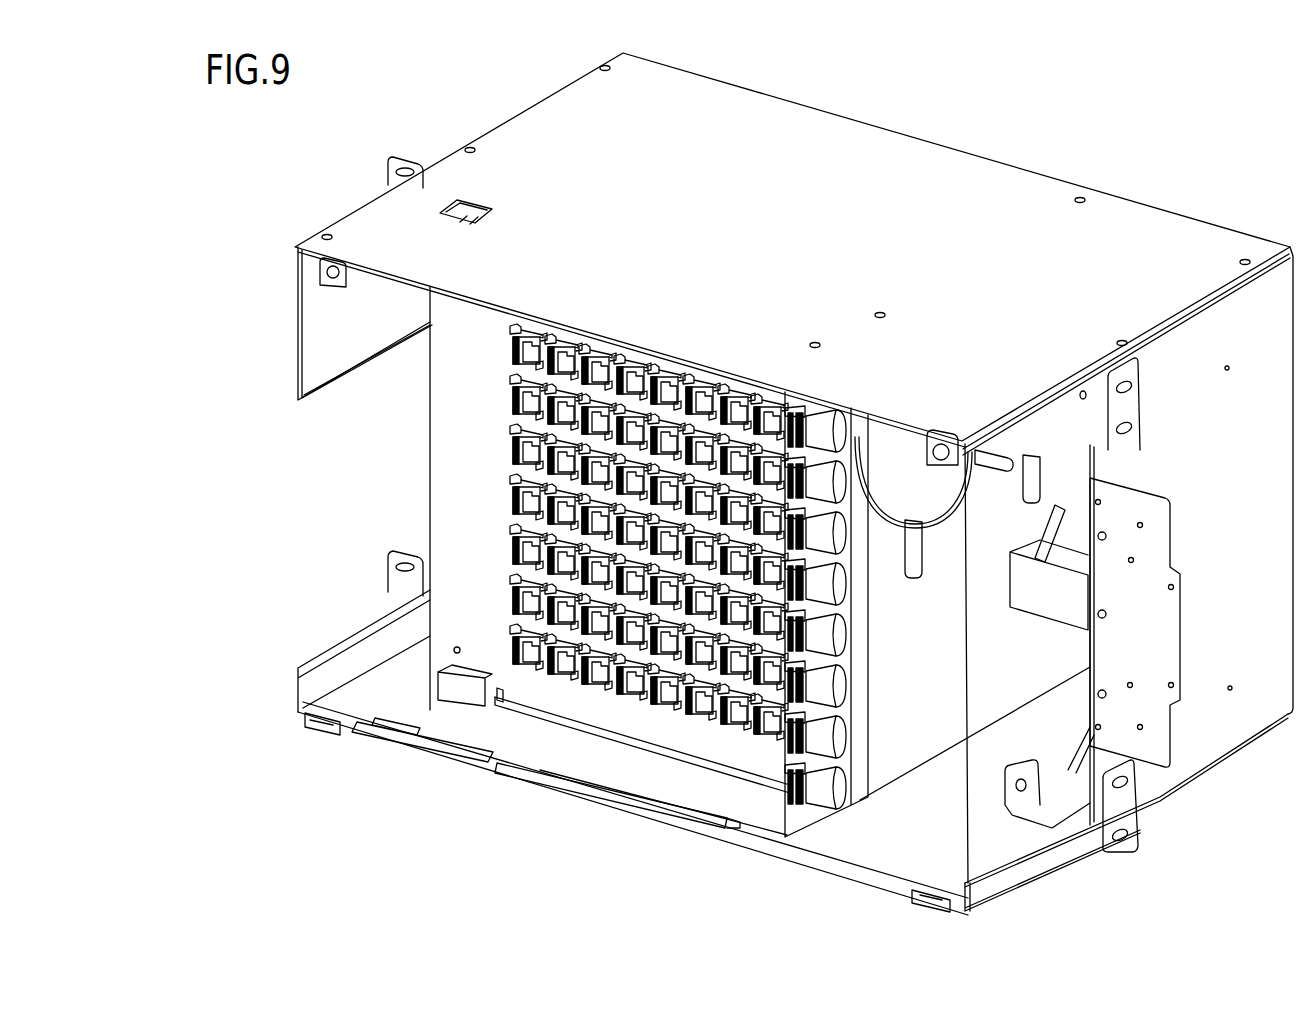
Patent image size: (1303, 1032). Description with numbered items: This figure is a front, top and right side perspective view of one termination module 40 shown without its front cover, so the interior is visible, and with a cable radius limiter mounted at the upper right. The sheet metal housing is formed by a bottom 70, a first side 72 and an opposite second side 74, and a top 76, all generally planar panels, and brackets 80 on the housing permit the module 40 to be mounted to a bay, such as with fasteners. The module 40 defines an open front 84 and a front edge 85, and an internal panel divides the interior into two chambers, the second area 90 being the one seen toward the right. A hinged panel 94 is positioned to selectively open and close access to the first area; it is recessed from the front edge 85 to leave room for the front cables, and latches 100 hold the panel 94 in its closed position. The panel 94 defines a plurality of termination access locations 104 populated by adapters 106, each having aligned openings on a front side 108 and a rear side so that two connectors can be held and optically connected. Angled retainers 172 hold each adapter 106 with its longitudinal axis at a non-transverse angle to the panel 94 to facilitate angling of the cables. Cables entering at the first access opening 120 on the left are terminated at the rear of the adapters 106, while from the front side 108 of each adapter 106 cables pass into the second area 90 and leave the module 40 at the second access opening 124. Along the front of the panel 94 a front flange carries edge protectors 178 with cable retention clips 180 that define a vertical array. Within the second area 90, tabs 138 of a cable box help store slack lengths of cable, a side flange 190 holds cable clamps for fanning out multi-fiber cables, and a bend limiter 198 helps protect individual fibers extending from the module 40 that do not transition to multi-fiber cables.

The termination module 40 is at (1106, 152).
The bottom 70 is at (887, 873).
The first side 72 is at (372, 319).
The second side 74 is at (1284, 627).
The top 76 is at (771, 217).
The brackets 80 is at (1138, 420).
The open front 84 is at (610, 800).
The front edge 85 is at (481, 770).
The second area 90 is at (986, 617).
The hinged panel 94 is at (722, 563).
The latches 100 is at (470, 212).
The termination access locations 104 is at (667, 370).
The adapters 106 is at (707, 390).
The front side 108 is at (695, 390).
The first access opening 120 is at (352, 378).
The second access opening 124 is at (1030, 845).
The tabs 138 is at (1063, 612).
The angled retainers 172 is at (758, 397).
The edge protectors 178 is at (835, 778).
The cable retention clips 180 is at (810, 795).
The side flange 190 is at (1170, 535).
The bend limiter 198 is at (1063, 440).